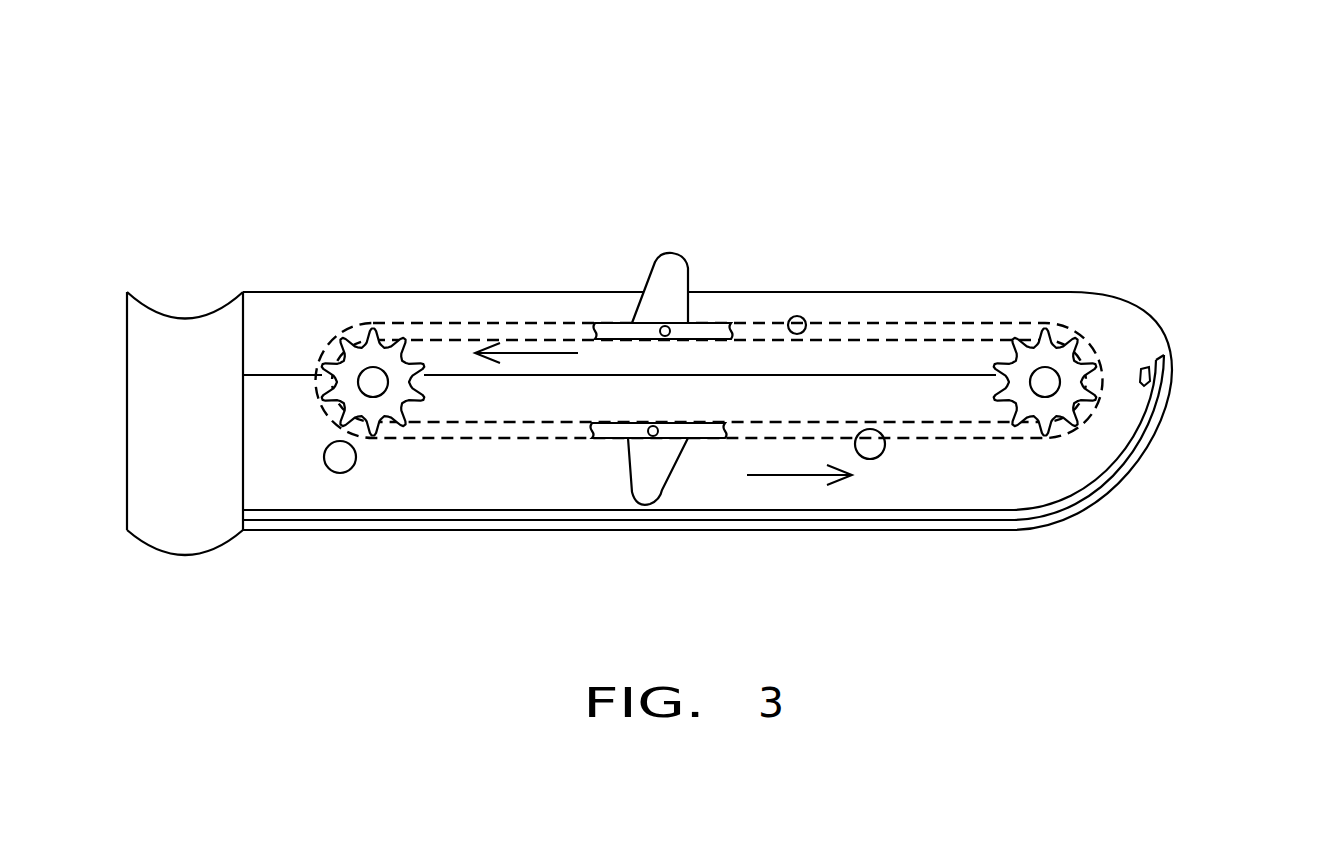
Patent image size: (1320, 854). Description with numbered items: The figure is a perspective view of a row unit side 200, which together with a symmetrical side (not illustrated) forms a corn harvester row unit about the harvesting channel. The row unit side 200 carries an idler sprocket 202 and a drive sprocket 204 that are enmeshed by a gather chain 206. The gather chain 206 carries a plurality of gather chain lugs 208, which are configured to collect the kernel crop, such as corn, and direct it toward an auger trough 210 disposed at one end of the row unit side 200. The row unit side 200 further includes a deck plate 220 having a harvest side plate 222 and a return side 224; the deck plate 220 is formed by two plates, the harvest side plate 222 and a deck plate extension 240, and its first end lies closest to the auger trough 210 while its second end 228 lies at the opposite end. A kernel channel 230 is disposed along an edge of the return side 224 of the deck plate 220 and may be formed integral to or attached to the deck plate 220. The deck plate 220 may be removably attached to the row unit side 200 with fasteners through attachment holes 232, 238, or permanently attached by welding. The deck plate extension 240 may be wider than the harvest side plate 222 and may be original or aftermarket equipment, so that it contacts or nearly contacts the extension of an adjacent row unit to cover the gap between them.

The row unit side 200 is at (701, 178).
The idler sprocket 202 is at (1078, 423).
The drive sprocket 204 is at (332, 398).
The gather chain 206 is at (700, 436).
The gather chain lugs 208 is at (660, 280).
The auger trough 210 is at (187, 557).
The deck plate 220 is at (888, 299).
The harvest side plate 222 is at (986, 299).
The return side 224 is at (980, 497).
The second end 228 is at (243, 325).
The kernel channel 230 is at (368, 522).
The attachment hole 232 is at (872, 460).
The attachment hole 238 is at (798, 316).
The deck plate extension 240 is at (806, 502).